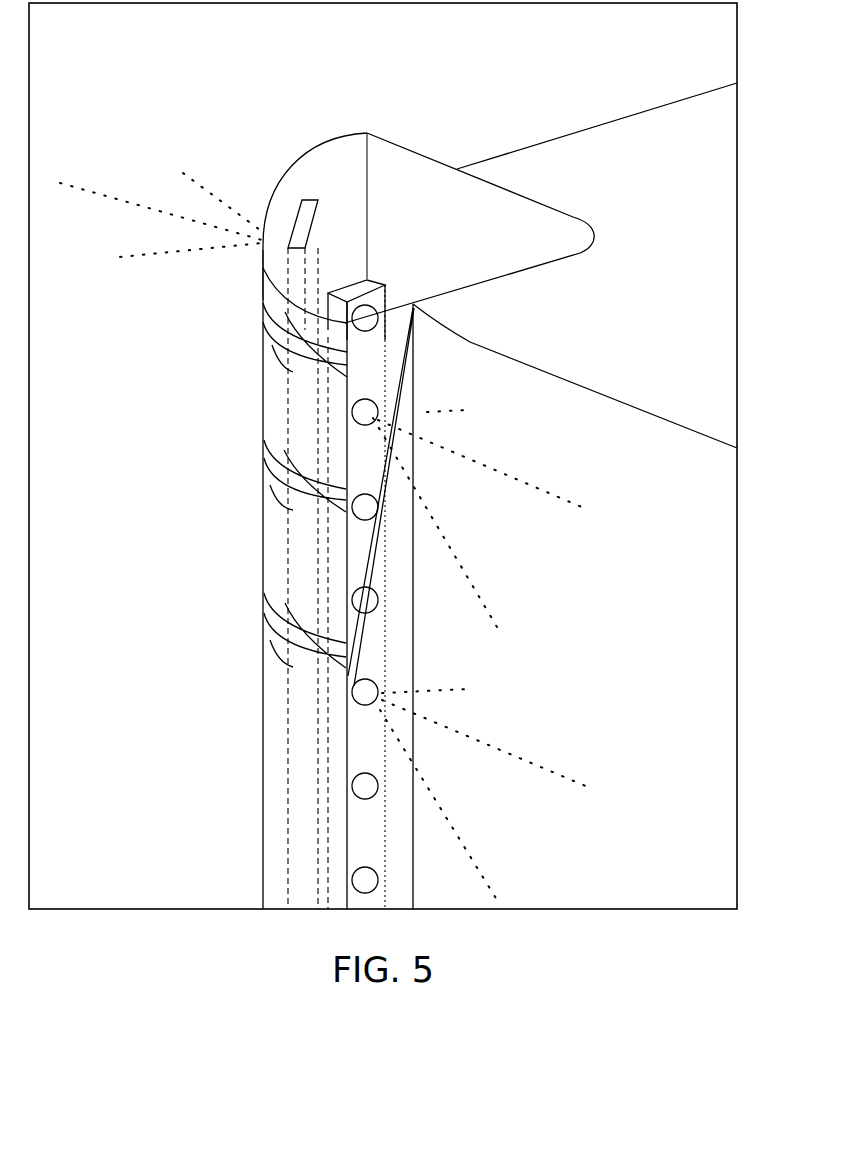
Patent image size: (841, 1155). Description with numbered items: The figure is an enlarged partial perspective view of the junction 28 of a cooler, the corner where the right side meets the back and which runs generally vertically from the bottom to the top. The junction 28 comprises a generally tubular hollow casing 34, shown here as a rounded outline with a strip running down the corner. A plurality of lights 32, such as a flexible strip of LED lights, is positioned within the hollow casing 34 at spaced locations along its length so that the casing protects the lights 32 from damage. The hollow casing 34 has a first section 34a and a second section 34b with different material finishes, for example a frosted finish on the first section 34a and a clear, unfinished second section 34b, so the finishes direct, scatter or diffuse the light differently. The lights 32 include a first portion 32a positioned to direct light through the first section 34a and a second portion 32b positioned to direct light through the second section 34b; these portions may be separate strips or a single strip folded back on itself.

The junction 28 is at (307, 145).
The plurality of lights 32 is at (282, 240).
The first portion 32a is at (365, 537).
The second portion 32b is at (290, 259).
The hollow casing 34 is at (367, 133).
The first section 34a is at (273, 395).
The second section 34b is at (420, 310).